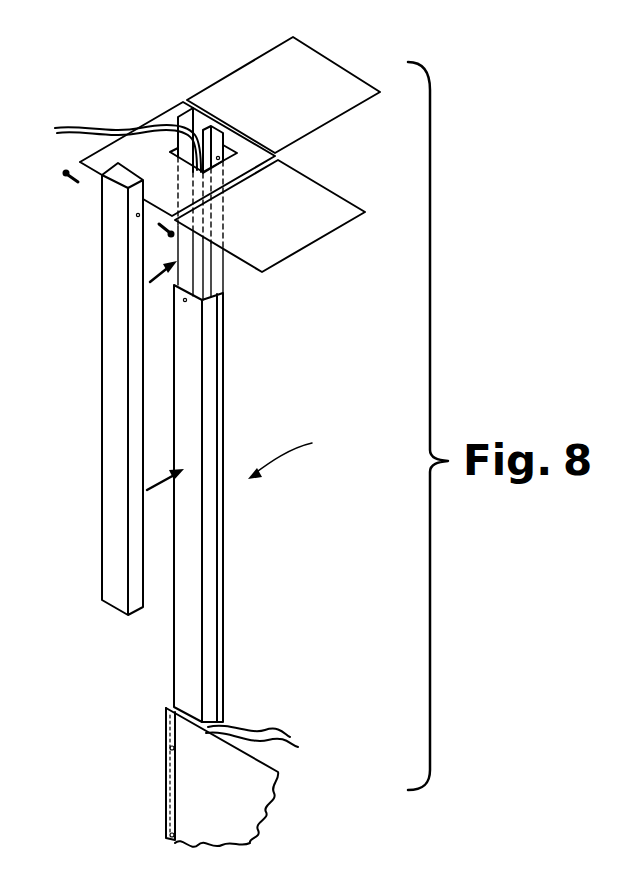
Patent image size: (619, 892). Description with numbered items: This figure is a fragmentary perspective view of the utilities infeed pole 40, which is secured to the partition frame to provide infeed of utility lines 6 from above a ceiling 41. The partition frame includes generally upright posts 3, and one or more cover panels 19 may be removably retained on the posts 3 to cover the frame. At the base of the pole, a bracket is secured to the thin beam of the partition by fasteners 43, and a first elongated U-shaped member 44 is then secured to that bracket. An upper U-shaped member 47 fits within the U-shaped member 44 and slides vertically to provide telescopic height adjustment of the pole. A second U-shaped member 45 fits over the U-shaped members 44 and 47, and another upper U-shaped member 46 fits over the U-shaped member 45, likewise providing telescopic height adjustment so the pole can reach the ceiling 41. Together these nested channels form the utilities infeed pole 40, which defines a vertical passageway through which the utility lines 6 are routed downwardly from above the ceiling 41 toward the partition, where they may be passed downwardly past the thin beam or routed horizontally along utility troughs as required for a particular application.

The upright post 3 is at (165, 767).
The utility lines 6 is at (108, 124).
The cover panel 19 is at (240, 807).
The utilities infeed pole 40 is at (318, 452).
The ceiling 41 is at (302, 223).
The fasteners 43 is at (68, 180).
The first elongated U-shaped member 44 is at (223, 688).
The second U-shaped member 45 is at (168, 657).
The upper U-shaped member 46 is at (100, 540).
The upper U-shaped member 47 is at (223, 375).